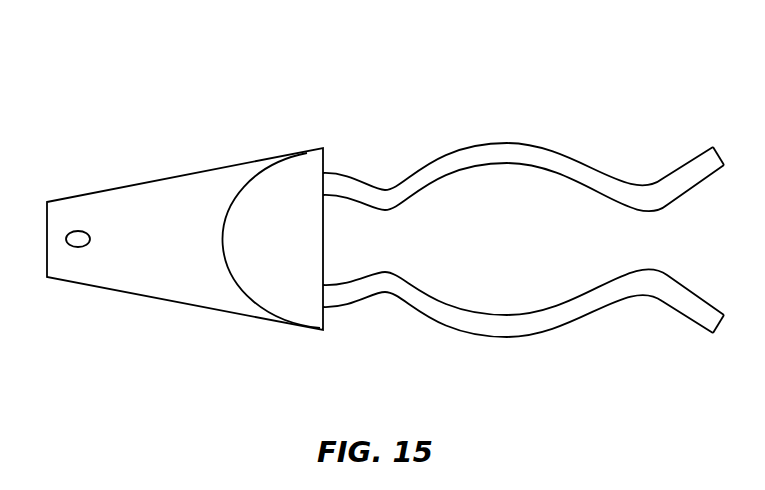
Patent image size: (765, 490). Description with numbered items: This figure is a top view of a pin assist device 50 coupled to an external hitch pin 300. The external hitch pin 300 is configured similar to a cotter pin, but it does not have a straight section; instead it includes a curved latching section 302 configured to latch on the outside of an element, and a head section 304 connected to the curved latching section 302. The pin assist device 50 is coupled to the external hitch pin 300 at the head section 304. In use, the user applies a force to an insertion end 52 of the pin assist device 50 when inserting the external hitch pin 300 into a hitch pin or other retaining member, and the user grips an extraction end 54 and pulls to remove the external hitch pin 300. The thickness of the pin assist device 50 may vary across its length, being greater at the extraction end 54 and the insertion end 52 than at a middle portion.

The pin assist device 50 is at (178, 201).
The insertion end 52 is at (305, 175).
The extraction end 54 is at (68, 265).
The external hitch pin 300 is at (523, 208).
The curved latching section 302 is at (523, 229).
The head section 304 is at (348, 297).